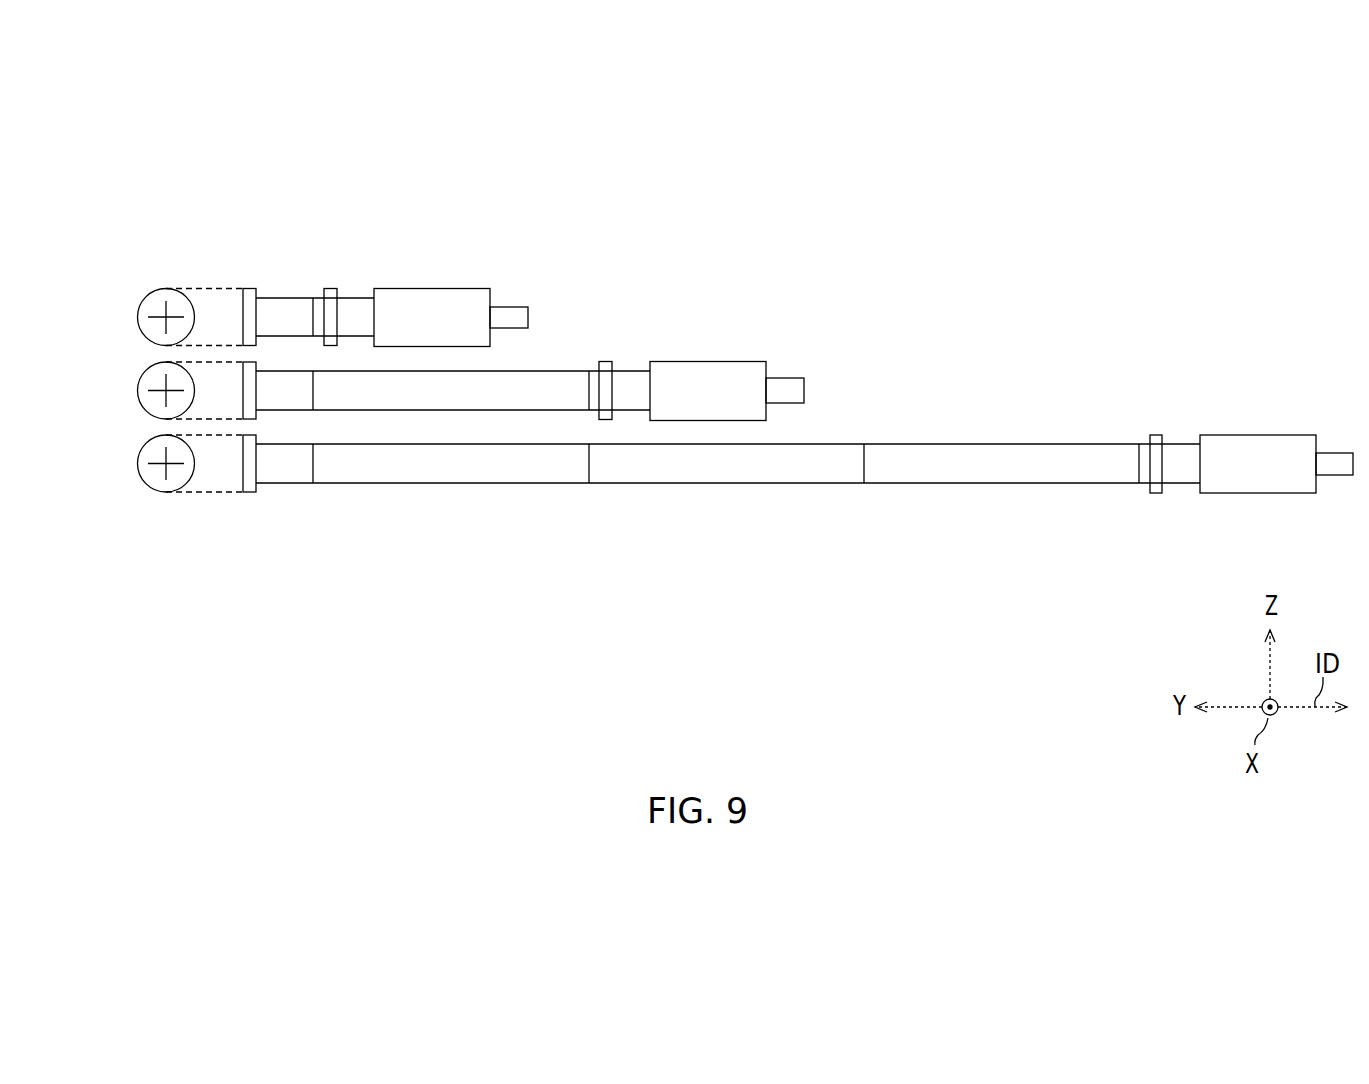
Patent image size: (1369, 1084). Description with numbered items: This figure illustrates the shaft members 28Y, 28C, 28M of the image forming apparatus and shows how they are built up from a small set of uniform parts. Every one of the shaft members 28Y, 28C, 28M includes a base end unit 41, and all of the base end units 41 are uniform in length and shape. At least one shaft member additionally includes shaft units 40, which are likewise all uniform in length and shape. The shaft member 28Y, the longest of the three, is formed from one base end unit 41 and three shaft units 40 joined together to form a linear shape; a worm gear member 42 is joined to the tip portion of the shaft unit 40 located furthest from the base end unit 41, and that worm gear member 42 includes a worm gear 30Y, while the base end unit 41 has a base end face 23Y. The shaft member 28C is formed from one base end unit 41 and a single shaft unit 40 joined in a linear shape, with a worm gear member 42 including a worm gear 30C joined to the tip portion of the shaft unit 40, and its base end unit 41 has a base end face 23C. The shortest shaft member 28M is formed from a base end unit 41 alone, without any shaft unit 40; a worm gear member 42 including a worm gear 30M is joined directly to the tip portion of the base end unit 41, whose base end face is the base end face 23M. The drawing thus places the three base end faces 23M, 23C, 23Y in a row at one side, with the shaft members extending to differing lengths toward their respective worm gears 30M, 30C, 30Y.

The base end face 23M is at (249, 288).
The base end face 23C is at (243, 405).
The base end face 23Y is at (247, 495).
The shaft member 28M is at (302, 282).
The shaft member 28C is at (577, 355).
The shaft member 28Y is at (1073, 417).
The worm gear 30M is at (440, 300).
The worm gear 30C is at (715, 372).
The worm gear 30Y is at (1275, 442).
The shaft unit 40 is at (550, 382).
The base end unit 41 is at (273, 307).
The worm gear member 42 is at (355, 307).